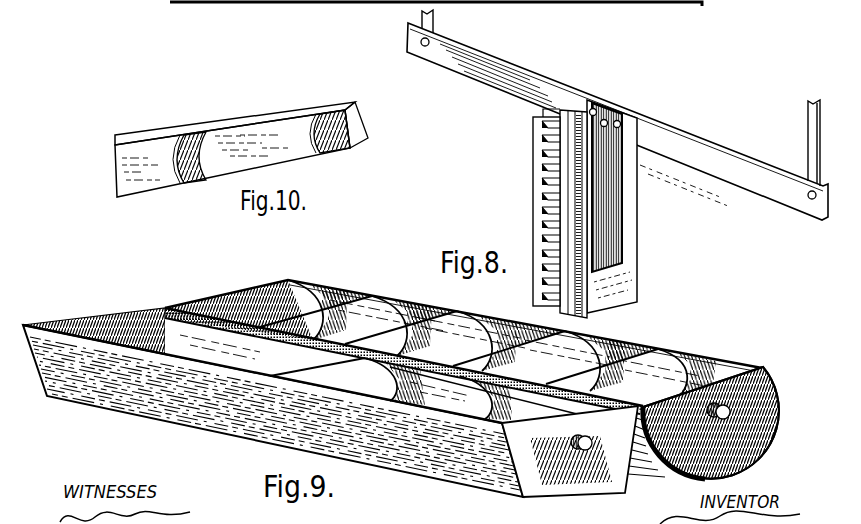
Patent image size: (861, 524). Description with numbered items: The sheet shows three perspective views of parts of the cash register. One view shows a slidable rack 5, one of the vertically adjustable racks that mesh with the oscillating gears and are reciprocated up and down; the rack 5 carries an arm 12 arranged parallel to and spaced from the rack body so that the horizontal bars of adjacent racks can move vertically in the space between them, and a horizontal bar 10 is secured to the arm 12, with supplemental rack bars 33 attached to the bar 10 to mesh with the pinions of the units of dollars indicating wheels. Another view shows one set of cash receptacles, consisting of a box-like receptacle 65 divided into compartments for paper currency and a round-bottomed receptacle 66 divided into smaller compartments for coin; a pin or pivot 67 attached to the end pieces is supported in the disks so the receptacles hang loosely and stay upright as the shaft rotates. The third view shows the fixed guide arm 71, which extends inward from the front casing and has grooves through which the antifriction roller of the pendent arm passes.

In FIG. 8, the rack 5 is at (536, 170).
In FIG. 8, the horizontal bar 10 is at (677, 130).
In FIG. 8, the arm 12 is at (636, 203).
In FIG. 8, the supplemental rack bar 33 is at (433, 18).
In FIG. 9, the box-like receptacle 65 is at (570, 451).
In FIG. 9, the round-bottomed receptacle 66 is at (703, 423).
In FIG. 9, the pin or pivot 67 is at (583, 450).
In FIG. 10, the fixed arm 71 is at (241, 149).